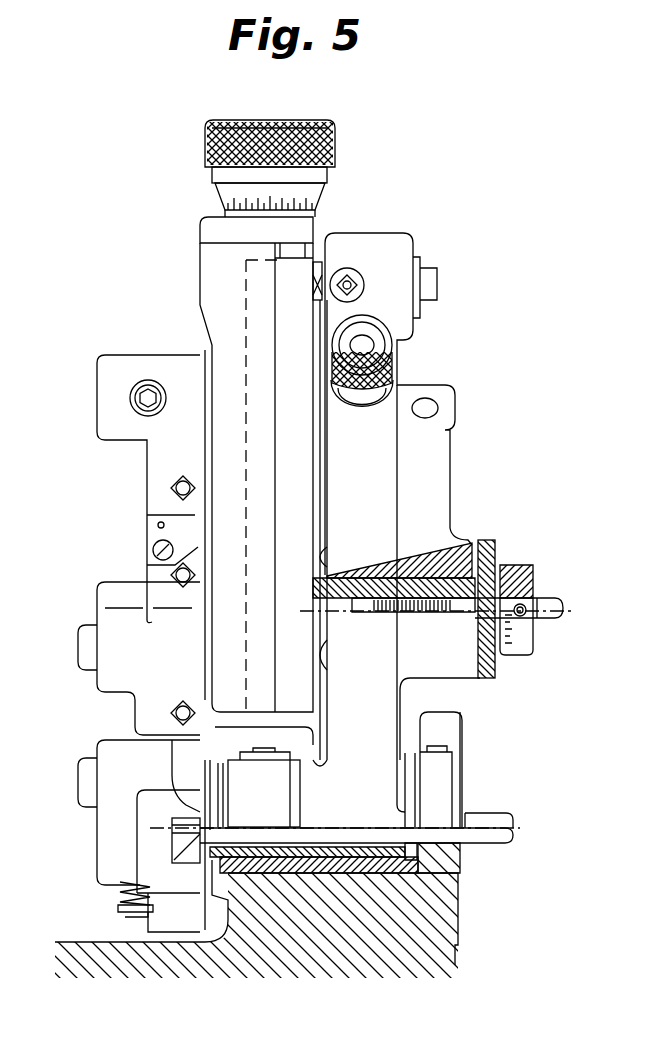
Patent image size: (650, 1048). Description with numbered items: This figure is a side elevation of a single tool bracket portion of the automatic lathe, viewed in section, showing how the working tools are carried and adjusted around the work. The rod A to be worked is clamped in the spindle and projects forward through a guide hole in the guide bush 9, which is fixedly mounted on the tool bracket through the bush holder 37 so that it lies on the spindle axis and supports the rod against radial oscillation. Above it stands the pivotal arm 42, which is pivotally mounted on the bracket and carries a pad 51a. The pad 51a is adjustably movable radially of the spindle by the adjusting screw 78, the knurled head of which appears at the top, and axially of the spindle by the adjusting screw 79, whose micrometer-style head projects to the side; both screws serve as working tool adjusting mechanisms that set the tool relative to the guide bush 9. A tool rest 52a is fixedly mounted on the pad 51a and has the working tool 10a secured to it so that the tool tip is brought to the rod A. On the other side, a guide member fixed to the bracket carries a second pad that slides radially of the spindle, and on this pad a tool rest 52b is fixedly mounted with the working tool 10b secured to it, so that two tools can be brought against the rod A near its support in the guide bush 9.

The adjusting screw 78 is at (300, 150).
The pad 51a is at (222, 323).
The pivotal arm 42 is at (385, 472).
The adjusting screw 79 is at (535, 572).
The tool rest 52a is at (117, 627).
The working tool 10a is at (178, 762).
The working tool 10b is at (175, 838).
The tool rest 52b is at (108, 872).
The guide bush 9 is at (207, 862).
The bush holder 37 is at (289, 874).
The rod A is at (495, 812).